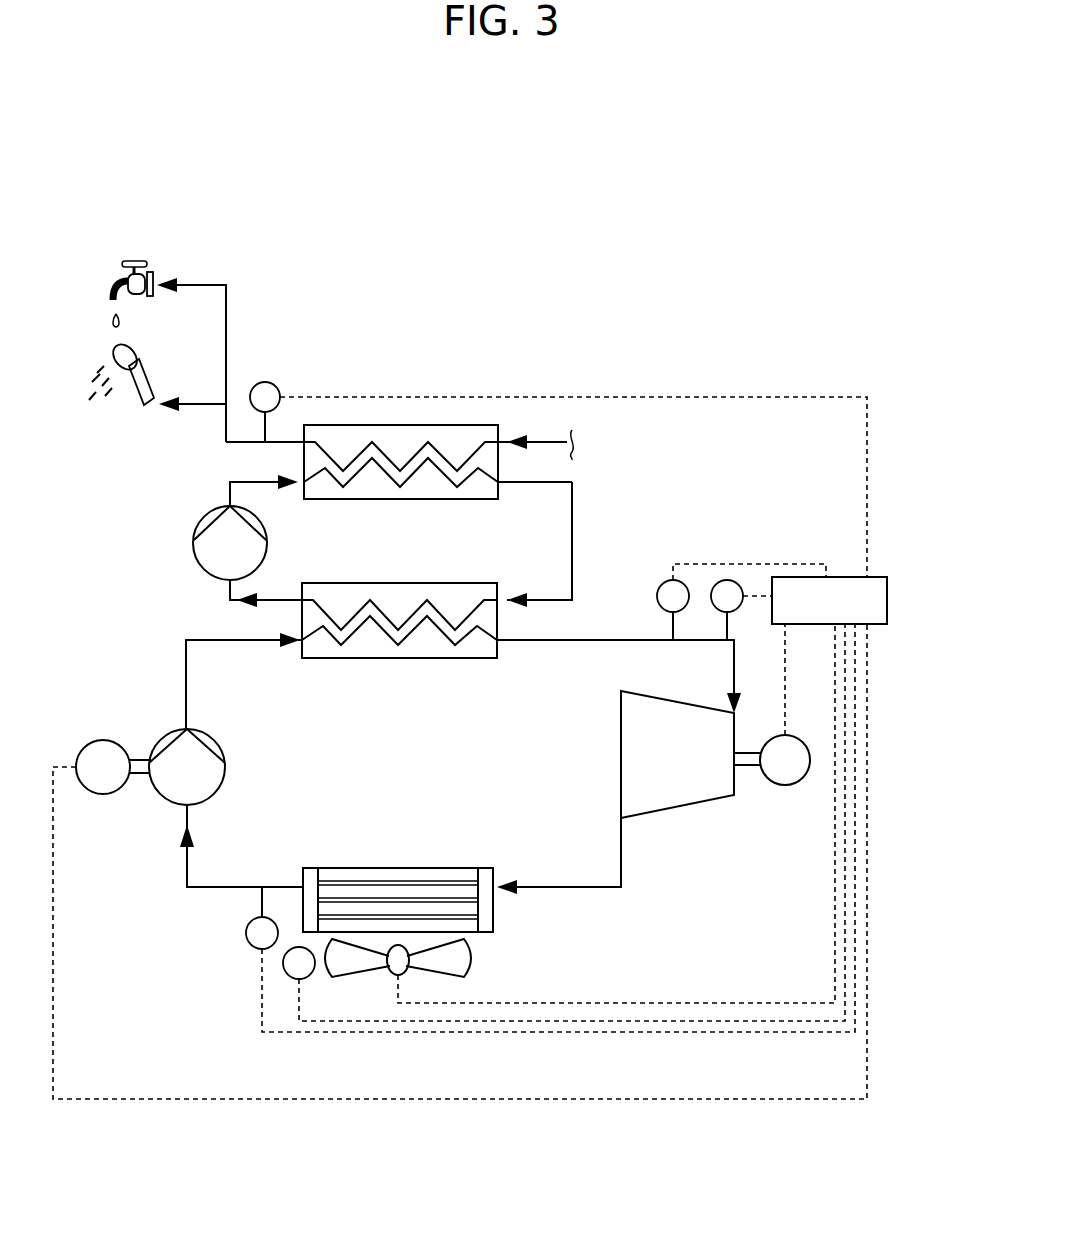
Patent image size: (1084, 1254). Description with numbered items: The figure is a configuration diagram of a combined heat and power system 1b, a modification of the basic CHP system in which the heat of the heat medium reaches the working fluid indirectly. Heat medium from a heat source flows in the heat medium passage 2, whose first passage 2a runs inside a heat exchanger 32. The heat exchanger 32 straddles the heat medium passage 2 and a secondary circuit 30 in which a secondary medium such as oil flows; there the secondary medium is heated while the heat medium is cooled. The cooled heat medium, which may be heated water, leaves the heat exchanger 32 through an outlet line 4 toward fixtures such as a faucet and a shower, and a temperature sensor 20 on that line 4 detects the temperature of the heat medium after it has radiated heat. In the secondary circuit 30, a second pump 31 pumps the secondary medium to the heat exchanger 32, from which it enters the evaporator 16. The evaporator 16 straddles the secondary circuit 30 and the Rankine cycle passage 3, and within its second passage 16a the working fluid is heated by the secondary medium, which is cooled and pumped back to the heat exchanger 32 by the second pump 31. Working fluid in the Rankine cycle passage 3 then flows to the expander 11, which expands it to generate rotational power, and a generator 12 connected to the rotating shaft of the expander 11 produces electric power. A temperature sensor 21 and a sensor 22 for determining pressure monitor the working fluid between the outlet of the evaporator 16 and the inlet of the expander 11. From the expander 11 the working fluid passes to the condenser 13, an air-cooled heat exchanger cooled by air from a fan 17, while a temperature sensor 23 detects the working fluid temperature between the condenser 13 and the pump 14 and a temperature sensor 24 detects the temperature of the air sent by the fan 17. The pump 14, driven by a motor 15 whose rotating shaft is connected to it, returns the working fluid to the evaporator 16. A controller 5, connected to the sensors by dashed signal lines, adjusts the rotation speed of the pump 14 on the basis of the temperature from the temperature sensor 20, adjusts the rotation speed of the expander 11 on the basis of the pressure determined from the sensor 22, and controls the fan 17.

The combined heat and power system 1b is at (699, 212).
The heat medium passage 2 is at (543, 442).
The first passage 2a is at (440, 453).
The Rankine cycle passage 3 is at (587, 887).
The hot water supply pipe 4 is at (226, 323).
The controller 5 is at (887, 600).
The expander 11 is at (620, 758).
The generator 12 is at (787, 785).
The condenser 13 is at (383, 868).
The pump 14 is at (157, 745).
The motor 15 is at (80, 752).
The evaporator 16 is at (405, 658).
The second passage 16a is at (453, 642).
The fan 17 is at (470, 962).
The temperature sensor 20 is at (272, 383).
The temperature sensor 21 is at (685, 580).
The sensor 22 is at (737, 580).
The temperature sensor 23 is at (246, 937).
The temperature sensor 24 is at (293, 977).
The secondary circuit 30 is at (573, 532).
The second pump 31 is at (193, 540).
The heat exchanger 32 is at (400, 425).